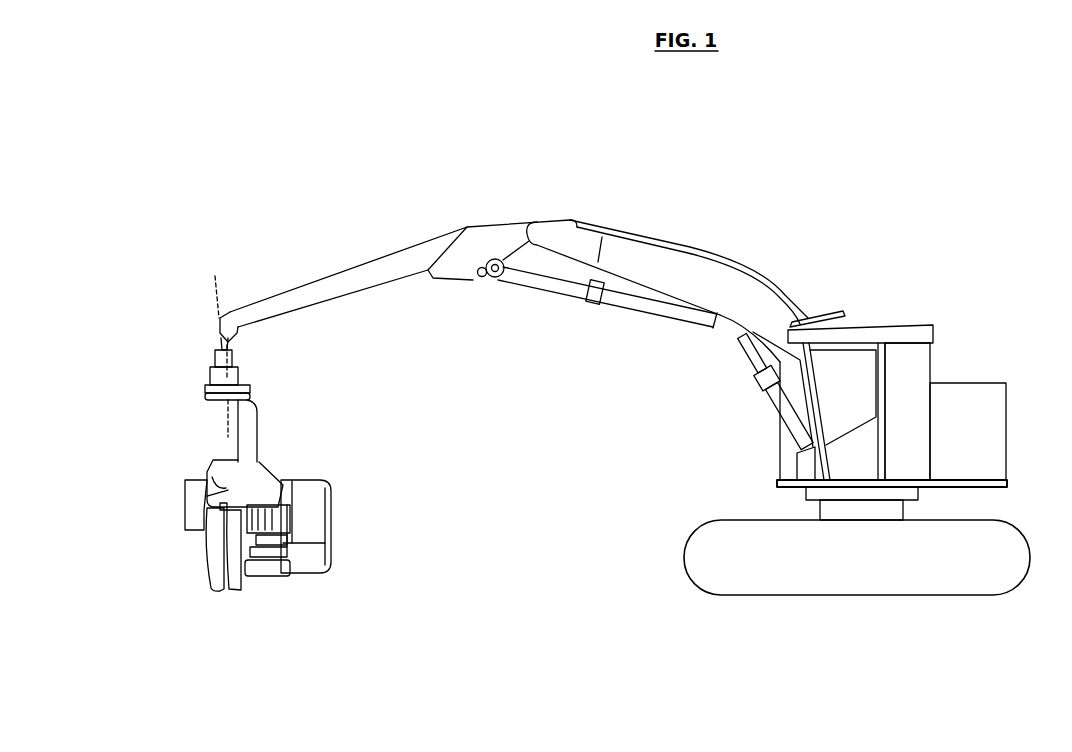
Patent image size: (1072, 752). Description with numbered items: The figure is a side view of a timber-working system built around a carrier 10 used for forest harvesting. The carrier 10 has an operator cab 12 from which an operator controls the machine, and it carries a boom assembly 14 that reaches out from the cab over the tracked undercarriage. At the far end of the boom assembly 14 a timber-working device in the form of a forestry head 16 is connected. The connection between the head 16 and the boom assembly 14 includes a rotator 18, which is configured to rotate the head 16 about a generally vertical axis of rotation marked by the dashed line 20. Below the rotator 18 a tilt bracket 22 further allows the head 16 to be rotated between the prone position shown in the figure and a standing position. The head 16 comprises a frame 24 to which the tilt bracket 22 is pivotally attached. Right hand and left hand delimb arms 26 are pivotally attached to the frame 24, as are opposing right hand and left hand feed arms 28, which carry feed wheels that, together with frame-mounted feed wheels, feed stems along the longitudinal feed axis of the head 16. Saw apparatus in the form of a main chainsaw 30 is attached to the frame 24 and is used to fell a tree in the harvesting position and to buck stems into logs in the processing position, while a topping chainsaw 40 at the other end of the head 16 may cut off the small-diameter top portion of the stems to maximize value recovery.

The carrier 10 is at (320, 228).
The operator cab 12 is at (908, 322).
The boom assembly 14 is at (680, 244).
The forestry head 16 is at (362, 461).
The rotator 18 is at (238, 365).
The axis of rotation 20 is at (213, 345).
The tilt bracket 22 is at (258, 446).
The frame 24 is at (212, 477).
The delimb arms 26 is at (214, 588).
The feed arms 28 is at (263, 578).
The main chainsaw 30 is at (330, 585).
The topping chainsaw 40 is at (180, 543).